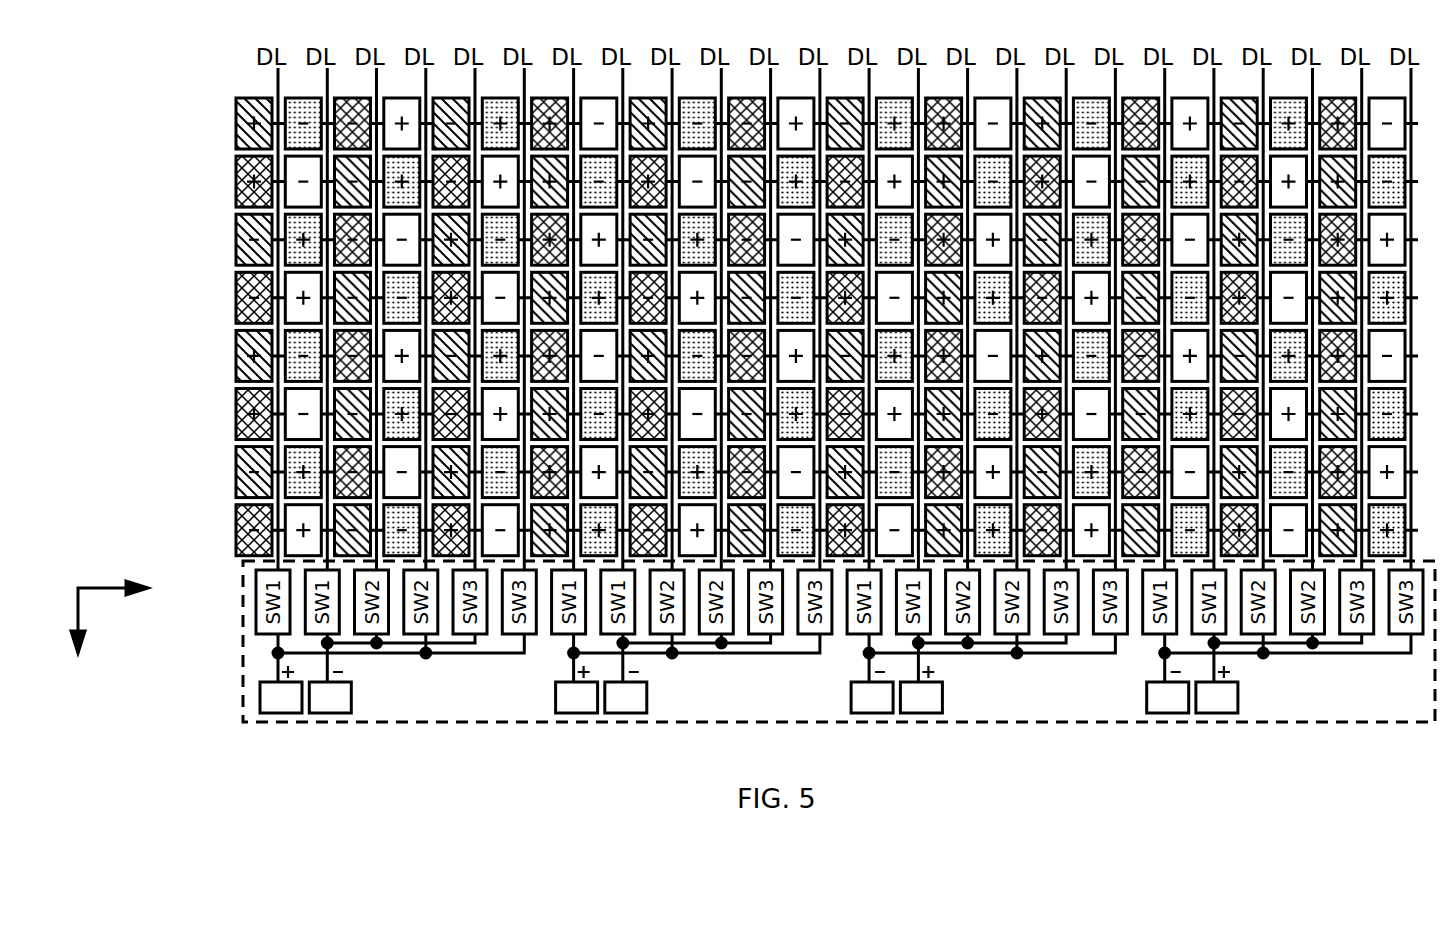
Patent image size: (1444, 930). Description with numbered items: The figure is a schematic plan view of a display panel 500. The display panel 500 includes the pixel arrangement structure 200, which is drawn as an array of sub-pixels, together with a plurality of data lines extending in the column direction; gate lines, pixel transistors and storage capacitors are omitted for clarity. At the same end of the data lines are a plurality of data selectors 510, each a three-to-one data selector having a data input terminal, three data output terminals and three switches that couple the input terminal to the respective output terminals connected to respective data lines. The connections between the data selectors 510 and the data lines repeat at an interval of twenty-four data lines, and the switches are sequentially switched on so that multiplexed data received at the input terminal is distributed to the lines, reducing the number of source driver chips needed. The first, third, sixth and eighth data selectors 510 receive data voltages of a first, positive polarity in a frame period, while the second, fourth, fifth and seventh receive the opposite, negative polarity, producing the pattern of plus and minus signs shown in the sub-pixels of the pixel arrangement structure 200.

The display panel 500 is at (156, 66).
The pixel arrangement structure 200 is at (198, 281).
The data selectors 510 is at (243, 688).